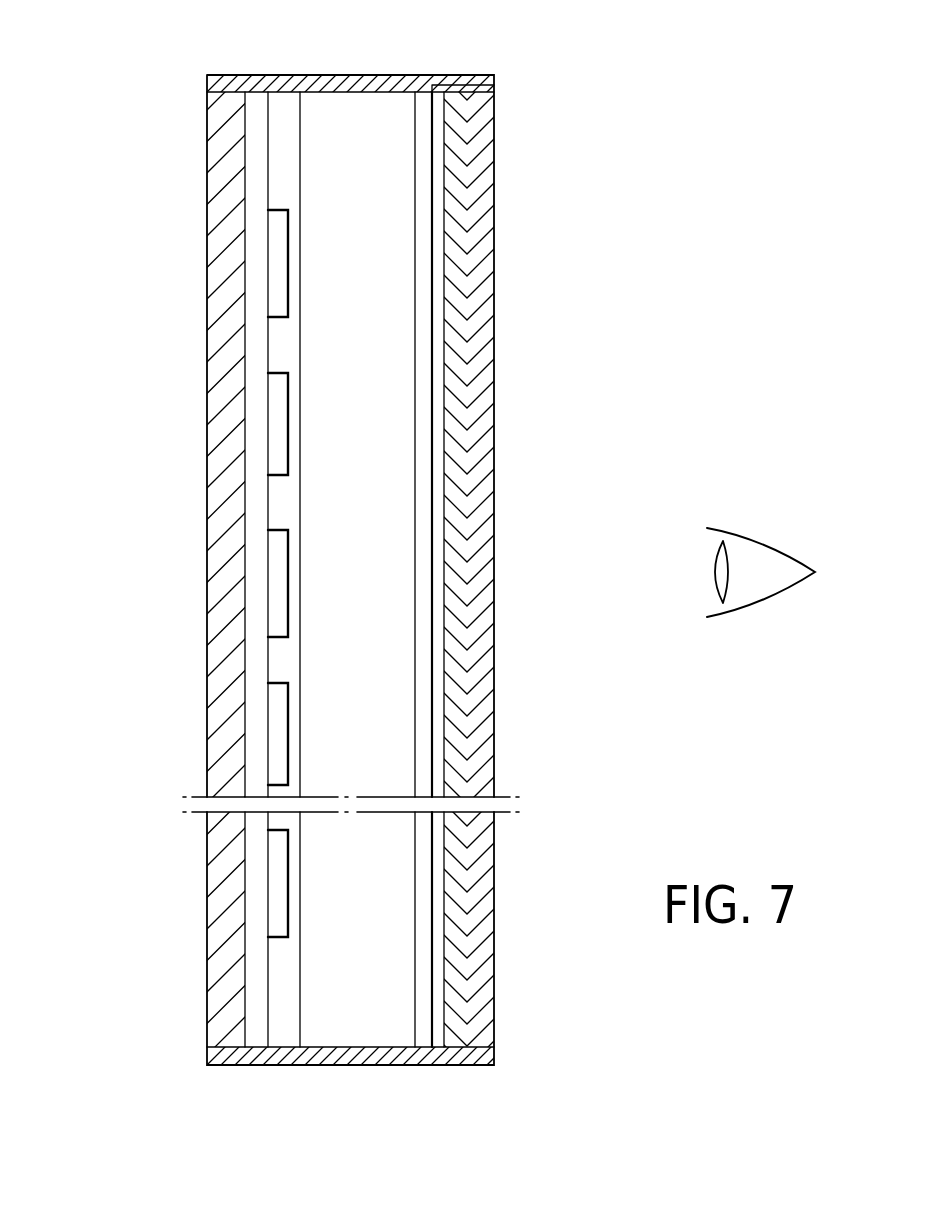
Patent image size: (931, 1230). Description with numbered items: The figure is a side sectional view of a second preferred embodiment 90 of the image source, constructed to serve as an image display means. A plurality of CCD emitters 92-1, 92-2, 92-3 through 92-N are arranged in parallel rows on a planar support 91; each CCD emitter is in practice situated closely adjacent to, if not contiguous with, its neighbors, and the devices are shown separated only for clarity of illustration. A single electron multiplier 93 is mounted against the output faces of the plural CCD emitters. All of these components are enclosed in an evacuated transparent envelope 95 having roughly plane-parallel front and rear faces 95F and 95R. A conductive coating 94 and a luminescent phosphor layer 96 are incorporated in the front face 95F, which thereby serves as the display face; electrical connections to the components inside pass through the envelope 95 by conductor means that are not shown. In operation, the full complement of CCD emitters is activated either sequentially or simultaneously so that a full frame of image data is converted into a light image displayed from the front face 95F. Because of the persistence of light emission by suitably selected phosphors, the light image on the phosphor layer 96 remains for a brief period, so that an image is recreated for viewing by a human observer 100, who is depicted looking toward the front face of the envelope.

The second preferred embodiment of the image source 90 is at (655, 222).
The planar support 91 is at (258, 105).
The CCD emitter 92-1 is at (275, 265).
The CCD emitter 92-2 is at (272, 438).
The CCD emitter 92-3 is at (275, 585).
The CCD emitter 92-N is at (275, 877).
The electron multiplier 93 is at (360, 115).
The conductive coating 94 is at (453, 90).
The evacuated transparent envelope 95 is at (405, 1067).
The rear face 95R is at (208, 150).
The front face 95F is at (495, 172).
The luminescent phosphor layer 96 is at (437, 105).
The human observer 100 is at (752, 588).